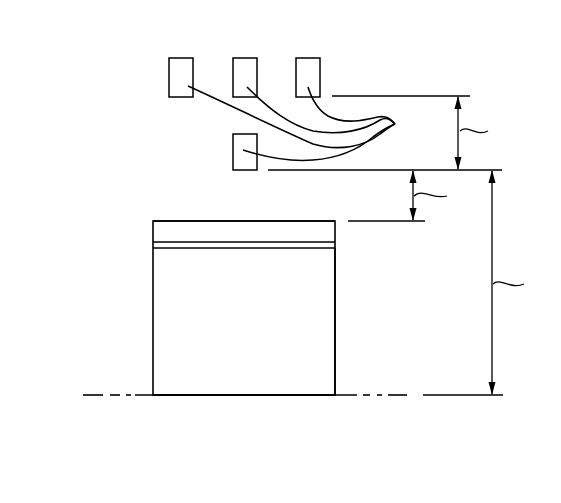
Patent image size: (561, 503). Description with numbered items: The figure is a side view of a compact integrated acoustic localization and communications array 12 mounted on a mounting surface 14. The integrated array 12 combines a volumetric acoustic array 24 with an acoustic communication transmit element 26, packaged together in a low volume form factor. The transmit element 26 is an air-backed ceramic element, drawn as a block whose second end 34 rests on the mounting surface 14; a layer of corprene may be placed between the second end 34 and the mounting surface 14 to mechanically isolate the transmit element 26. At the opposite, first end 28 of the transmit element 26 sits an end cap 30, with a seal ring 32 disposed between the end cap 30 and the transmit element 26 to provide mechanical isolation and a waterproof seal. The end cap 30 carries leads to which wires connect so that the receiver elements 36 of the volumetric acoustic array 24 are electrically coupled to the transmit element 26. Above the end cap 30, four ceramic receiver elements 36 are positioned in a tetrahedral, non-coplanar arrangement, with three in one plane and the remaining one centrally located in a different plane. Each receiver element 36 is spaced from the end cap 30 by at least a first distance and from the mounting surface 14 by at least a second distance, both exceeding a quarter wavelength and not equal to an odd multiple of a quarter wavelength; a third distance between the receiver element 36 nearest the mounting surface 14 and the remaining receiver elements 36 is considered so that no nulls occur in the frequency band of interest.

The integrated acoustic array 12 is at (98, 125).
The mounting surface 14 is at (95, 394).
The volumetric acoustic array 24 is at (357, 78).
The acoustic communication transmit element 26 is at (318, 323).
The first end 28 is at (192, 200).
The end cap 30 is at (170, 232).
The seal ring 32 is at (177, 258).
The second end 34 is at (155, 403).
The receiver elements 36 is at (307, 123).